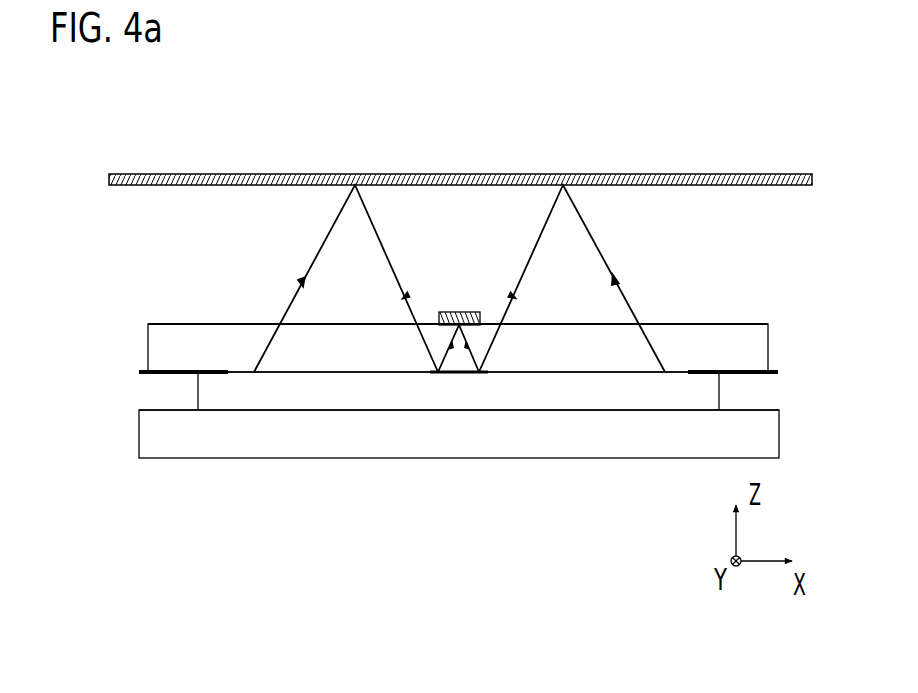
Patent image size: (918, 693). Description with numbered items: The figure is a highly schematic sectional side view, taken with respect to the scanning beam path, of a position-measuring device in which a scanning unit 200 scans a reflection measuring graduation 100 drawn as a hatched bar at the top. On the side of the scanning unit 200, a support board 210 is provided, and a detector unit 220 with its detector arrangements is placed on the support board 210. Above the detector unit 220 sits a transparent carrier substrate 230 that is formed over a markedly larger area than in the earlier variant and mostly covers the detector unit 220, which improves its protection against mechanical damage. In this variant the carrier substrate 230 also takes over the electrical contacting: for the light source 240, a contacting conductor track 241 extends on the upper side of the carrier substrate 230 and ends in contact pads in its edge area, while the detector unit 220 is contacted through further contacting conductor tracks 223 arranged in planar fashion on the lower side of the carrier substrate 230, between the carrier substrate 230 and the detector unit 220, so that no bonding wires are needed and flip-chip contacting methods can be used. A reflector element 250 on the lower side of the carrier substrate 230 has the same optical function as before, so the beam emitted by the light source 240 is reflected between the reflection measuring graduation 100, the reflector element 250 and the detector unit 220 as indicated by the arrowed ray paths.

The reflection measuring graduation 100 is at (141, 193).
The scanning unit 200 is at (126, 416).
The support board 210 is at (366, 432).
The detector unit 220 is at (288, 390).
The contacting conductor tracks 223 is at (139, 374).
The carrier substrate 230 is at (170, 343).
The light source 240 is at (452, 312).
The contacting conductor track 241 is at (718, 325).
The reflector element 250 is at (459, 373).